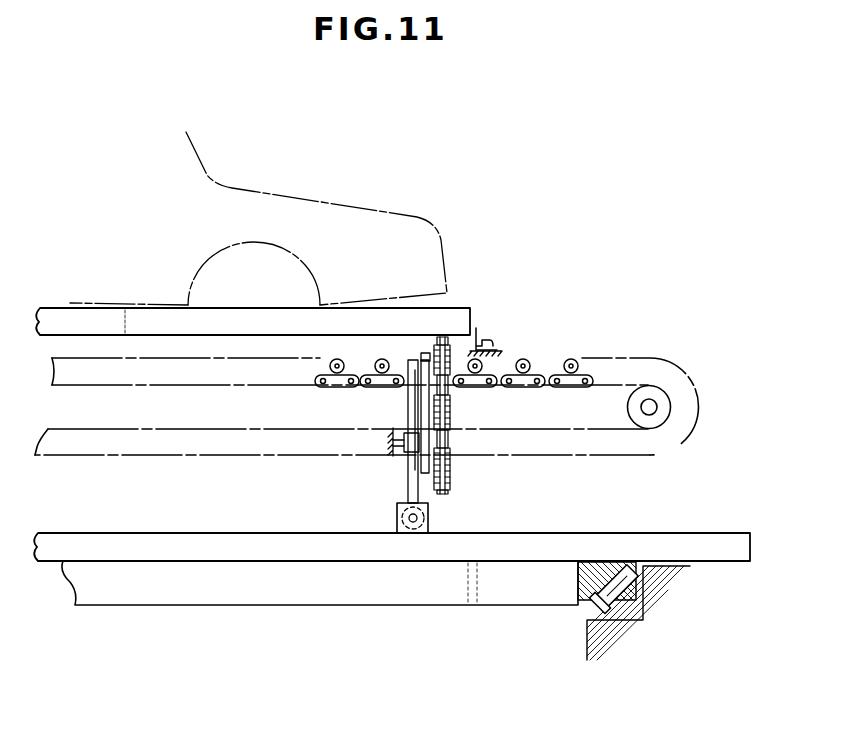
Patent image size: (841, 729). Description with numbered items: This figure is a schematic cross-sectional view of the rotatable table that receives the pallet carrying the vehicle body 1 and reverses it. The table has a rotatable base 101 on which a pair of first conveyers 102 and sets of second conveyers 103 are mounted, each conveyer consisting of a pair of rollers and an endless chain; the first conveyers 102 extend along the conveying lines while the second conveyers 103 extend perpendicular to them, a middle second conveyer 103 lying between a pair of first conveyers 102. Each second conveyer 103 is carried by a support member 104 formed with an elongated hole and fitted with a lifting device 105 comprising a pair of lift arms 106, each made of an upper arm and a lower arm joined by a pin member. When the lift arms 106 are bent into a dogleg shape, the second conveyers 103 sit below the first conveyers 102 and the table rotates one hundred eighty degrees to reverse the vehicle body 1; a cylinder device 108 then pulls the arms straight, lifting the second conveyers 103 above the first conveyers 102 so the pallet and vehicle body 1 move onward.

The vehicle body 1 is at (355, 200).
The rotatable base 101 is at (722, 547).
The first conveyer 102 is at (578, 357).
The second conveyer 103 is at (452, 462).
The support member 104 is at (425, 352).
The lifting device 105 is at (403, 466).
The lift arm 106 is at (408, 400).
The cylinder device 108 is at (430, 520).